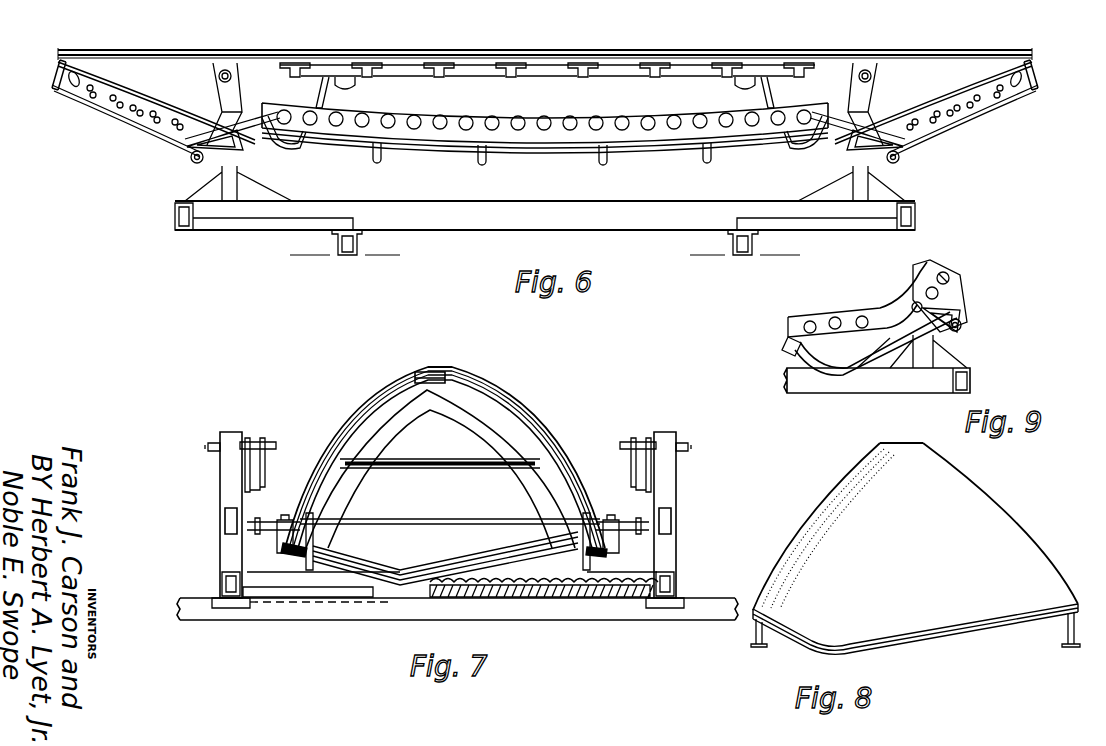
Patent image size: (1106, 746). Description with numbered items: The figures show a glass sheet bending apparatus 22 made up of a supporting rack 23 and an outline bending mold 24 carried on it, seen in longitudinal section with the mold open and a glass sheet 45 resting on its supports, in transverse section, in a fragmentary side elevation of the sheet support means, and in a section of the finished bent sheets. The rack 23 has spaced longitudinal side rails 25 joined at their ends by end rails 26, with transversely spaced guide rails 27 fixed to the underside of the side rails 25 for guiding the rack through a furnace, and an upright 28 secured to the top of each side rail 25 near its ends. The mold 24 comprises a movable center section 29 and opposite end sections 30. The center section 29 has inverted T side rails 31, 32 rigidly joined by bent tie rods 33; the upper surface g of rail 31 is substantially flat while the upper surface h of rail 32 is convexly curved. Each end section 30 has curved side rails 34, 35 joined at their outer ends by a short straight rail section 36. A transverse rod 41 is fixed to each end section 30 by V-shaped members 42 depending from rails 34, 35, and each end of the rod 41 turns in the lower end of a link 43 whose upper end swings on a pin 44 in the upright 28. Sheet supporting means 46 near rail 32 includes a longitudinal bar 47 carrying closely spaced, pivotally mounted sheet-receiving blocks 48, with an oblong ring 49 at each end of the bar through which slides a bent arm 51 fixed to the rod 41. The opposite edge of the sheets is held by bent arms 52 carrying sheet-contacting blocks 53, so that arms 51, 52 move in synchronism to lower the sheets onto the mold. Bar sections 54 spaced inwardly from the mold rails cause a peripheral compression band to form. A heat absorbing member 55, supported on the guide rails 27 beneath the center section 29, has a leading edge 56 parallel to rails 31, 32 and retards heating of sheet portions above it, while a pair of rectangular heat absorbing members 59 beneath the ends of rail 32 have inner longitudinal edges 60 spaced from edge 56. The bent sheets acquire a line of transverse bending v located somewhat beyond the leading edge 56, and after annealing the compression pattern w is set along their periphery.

In FIG. 6, the bending apparatus 22 is at (208, 46).
In FIG. 7, the bending apparatus 22 is at (326, 406).
In FIG. 6, the supporting rack 23 is at (172, 207).
In FIG. 7, the supporting rack 23 is at (218, 590).
In FIG. 6, the bending mold 24 is at (412, 150).
In FIG. 7, the bending mold 24 is at (326, 450).
In FIG. 6, the side rails 25 is at (450, 212).
In FIG. 9, the side rails 25 is at (877, 380).
In FIG. 7, the side rails 25 is at (220, 580).
In FIG. 6, the end rails 26 is at (173, 224).
In FIG. 9, the end rails 26 is at (960, 380).
In FIG. 7, the end rails 26 is at (336, 576).
In FIG. 6, the guide rails 27 is at (364, 246).
In FIG. 7, the guide rails 27 is at (220, 612).
In FIG. 6, the upright 28 is at (228, 178).
In FIG. 9, the upright 28 is at (912, 351).
In FIG. 7, the upright 28 is at (236, 497).
In FIG. 6, the center section 29 is at (532, 126).
In FIG. 6, the end sections 30 is at (74, 104).
In FIG. 7, the end sections 30 is at (372, 396).
In FIG. 9, the side rail 31 is at (830, 316).
In FIG. 8, the side rail 31 is at (1066, 636).
In FIG. 7, the side rail 31 is at (608, 552).
In FIG. 6, the side rail 32 is at (585, 120).
In FIG. 8, the side rail 32 is at (762, 636).
In FIG. 7, the side rail 32 is at (284, 550).
In FIG. 6, the bent tie rods 33 is at (603, 167).
In FIG. 7, the bent tie rods 33 is at (440, 552).
In FIG. 9, the curved side rail 34 is at (958, 278).
In FIG. 7, the curved side rail 34 is at (496, 404).
In FIG. 6, the curved side rail 35 is at (98, 106).
In FIG. 7, the curved side rail 35 is at (346, 427).
In FIG. 7, the straight rail section 36 is at (436, 372).
In FIG. 6, the transverse rod 41 is at (190, 162).
In FIG. 9, the transverse rod 41 is at (962, 326).
In FIG. 7, the transverse rod 41 is at (454, 520).
In FIG. 6, the V-shaped members 42 is at (186, 145).
In FIG. 9, the V-shaped members 42 is at (962, 314).
In FIG. 6, the link 43 is at (216, 90).
In FIG. 7, the link 43 is at (246, 468).
In FIG. 7, the pin 44 is at (210, 446).
In FIG. 6, the glass sheet 45 is at (263, 58).
In FIG. 6, the sheet supporting means 46 is at (460, 79).
In FIG. 6, the bar 47 is at (519, 79).
In FIG. 6, the sheet-receiving blocks 48 is at (655, 79).
In FIG. 6, the oblong ring 49 is at (356, 87).
In FIG. 6, the bent arm 51 is at (296, 150).
In FIG. 7, the bent arm 51 is at (309, 520).
In FIG. 9, the bent arms 52 is at (852, 376).
In FIG. 7, the bent arms 52 is at (566, 516).
In FIG. 9, the sheet-contacting blocks 53 is at (786, 345).
In FIG. 6, the bar sections 54 is at (118, 117).
In FIG. 7, the bar sections 54 is at (490, 440).
In FIG. 7, the heat absorbing member 55 is at (572, 598).
In FIG. 7, the leading edge 56 is at (414, 576).
In FIG. 6, the heat absorbing members 59 is at (278, 234).
In FIG. 7, the heat absorbing members 59 is at (288, 602).
In FIG. 7, the inner longitudinal edges 60 is at (374, 594).
In FIG. 7, the upper surface h is at (290, 516).
In FIG. 7, the upper surface g is at (602, 516).
In FIG. 8, the line of transverse bending v is at (834, 640).
In FIG. 8, the compression pattern w is at (992, 530).